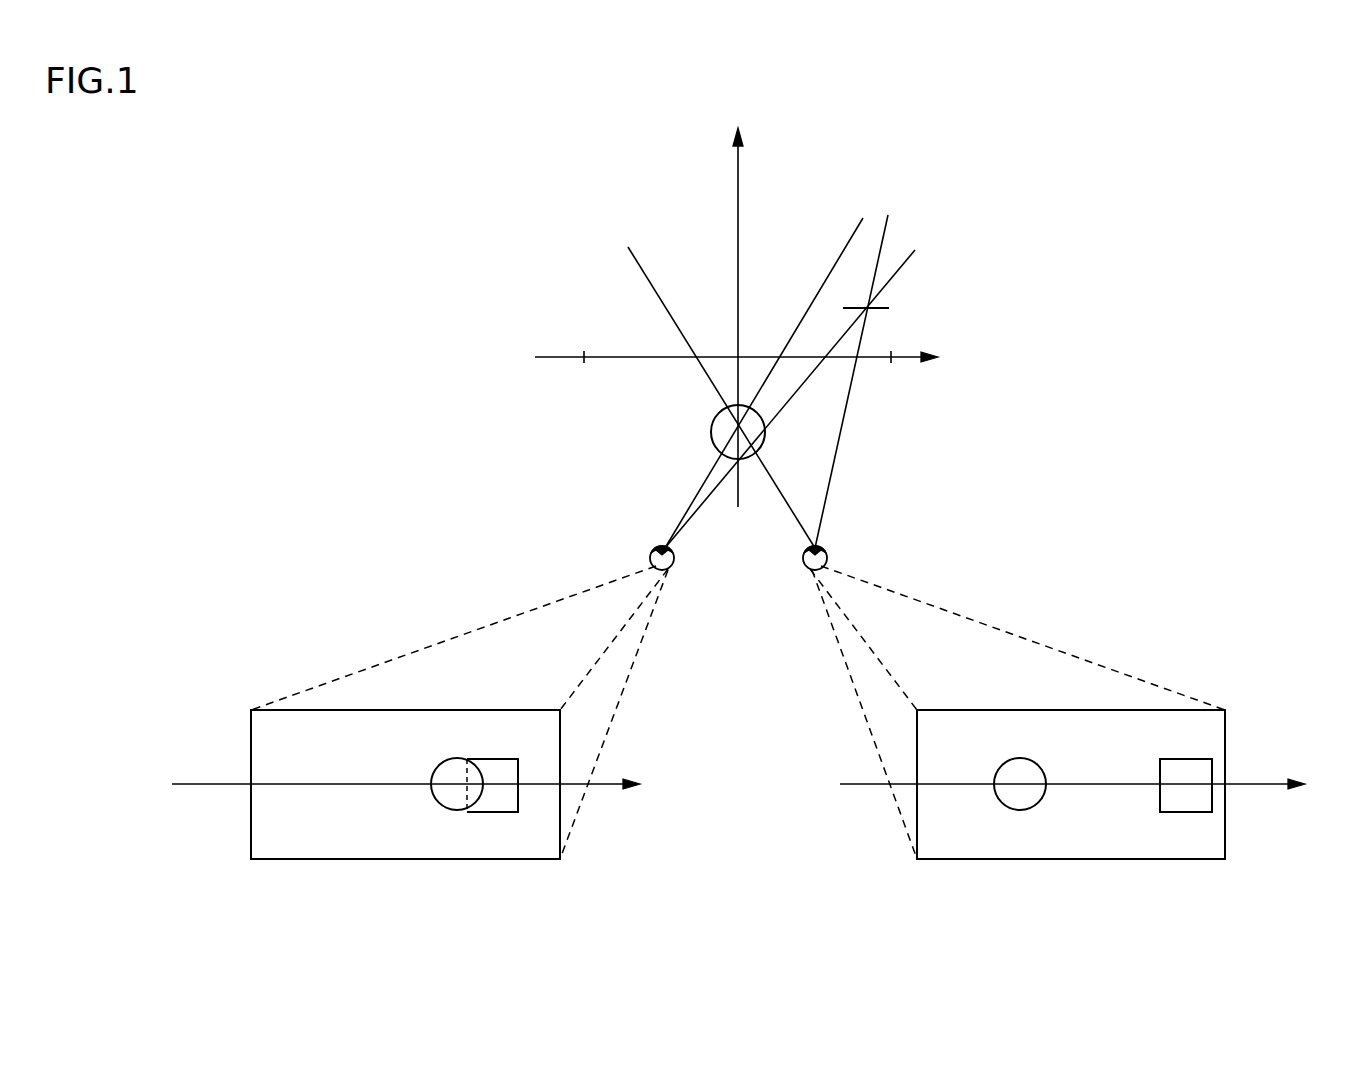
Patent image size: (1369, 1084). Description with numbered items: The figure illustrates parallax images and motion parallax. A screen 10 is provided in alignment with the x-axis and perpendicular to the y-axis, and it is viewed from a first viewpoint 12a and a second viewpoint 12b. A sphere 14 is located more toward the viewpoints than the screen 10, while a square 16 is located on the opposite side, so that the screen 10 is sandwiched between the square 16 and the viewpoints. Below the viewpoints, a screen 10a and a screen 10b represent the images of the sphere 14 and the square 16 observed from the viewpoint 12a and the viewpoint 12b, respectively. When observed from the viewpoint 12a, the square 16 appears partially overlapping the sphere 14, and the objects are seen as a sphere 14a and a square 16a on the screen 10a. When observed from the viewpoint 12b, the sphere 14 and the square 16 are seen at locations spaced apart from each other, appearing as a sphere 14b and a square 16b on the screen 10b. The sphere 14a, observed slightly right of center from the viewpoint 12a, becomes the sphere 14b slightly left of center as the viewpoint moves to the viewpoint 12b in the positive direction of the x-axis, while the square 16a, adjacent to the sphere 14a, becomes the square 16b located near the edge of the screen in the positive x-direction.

The screen 10 is at (638, 355).
The square 16 is at (882, 310).
The sphere 14 is at (710, 432).
The first viewpoint 12a is at (669, 572).
The second viewpoint 12b is at (808, 572).
The screen 10a is at (406, 709).
The screen 10b is at (1071, 709).
The sphere 14a is at (456, 811).
The square 16a is at (494, 813).
The sphere 14b is at (1019, 811).
The square 16b is at (1186, 813).